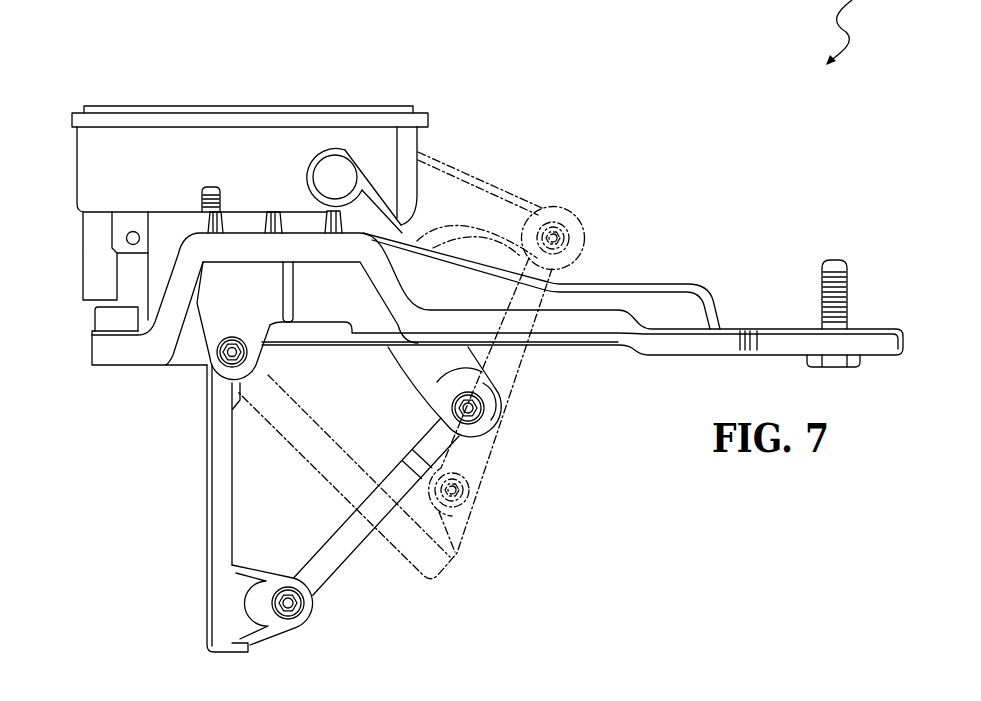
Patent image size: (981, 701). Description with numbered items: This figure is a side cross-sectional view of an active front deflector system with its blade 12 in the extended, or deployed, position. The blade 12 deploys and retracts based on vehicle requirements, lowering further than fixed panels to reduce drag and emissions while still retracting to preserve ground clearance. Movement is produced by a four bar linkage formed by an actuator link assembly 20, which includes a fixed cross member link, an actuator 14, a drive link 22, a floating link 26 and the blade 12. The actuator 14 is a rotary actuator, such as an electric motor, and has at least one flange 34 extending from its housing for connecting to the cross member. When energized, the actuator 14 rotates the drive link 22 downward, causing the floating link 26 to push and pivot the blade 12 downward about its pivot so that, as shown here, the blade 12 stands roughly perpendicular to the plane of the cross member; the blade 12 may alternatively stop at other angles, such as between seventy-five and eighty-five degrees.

The blade 12 is at (214, 488).
The actuator 14 is at (112, 80).
The actuator link assembly 20 is at (411, 378).
The drive link 22 is at (430, 372).
The floating link 26 is at (366, 528).
The flange 34 is at (95, 275).